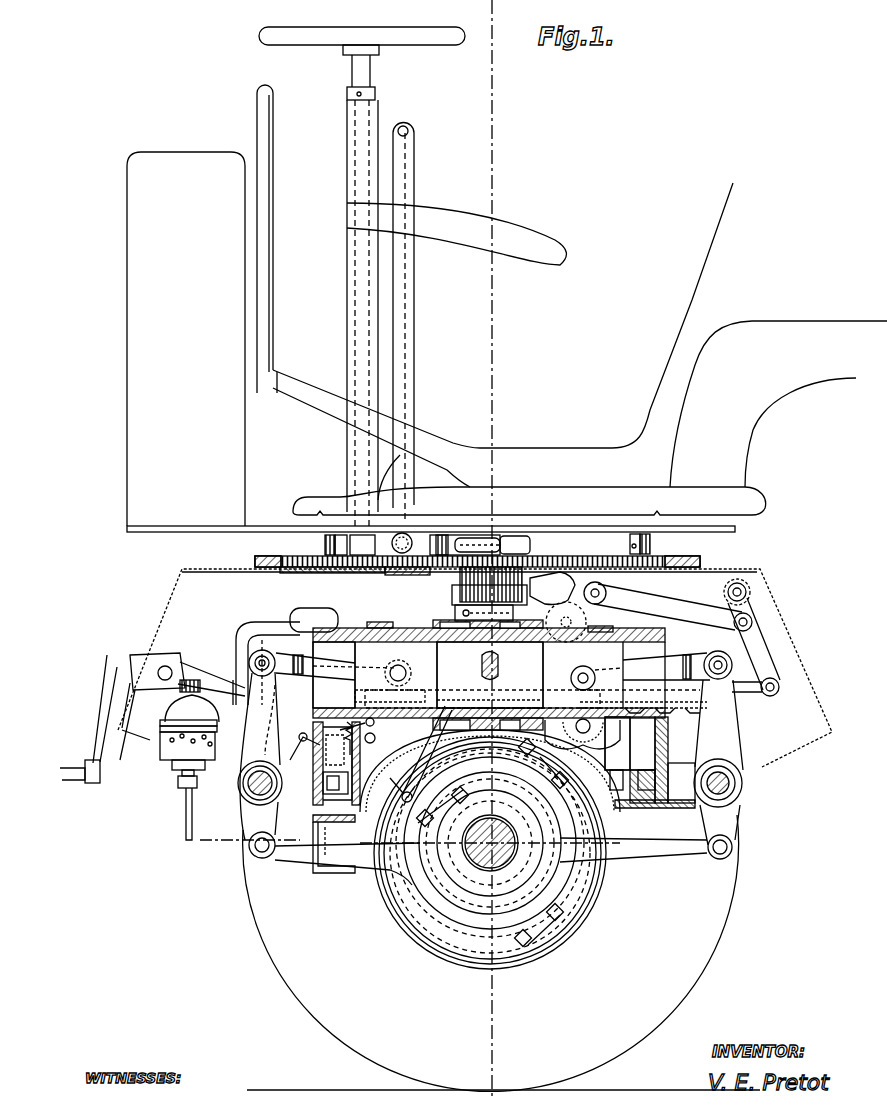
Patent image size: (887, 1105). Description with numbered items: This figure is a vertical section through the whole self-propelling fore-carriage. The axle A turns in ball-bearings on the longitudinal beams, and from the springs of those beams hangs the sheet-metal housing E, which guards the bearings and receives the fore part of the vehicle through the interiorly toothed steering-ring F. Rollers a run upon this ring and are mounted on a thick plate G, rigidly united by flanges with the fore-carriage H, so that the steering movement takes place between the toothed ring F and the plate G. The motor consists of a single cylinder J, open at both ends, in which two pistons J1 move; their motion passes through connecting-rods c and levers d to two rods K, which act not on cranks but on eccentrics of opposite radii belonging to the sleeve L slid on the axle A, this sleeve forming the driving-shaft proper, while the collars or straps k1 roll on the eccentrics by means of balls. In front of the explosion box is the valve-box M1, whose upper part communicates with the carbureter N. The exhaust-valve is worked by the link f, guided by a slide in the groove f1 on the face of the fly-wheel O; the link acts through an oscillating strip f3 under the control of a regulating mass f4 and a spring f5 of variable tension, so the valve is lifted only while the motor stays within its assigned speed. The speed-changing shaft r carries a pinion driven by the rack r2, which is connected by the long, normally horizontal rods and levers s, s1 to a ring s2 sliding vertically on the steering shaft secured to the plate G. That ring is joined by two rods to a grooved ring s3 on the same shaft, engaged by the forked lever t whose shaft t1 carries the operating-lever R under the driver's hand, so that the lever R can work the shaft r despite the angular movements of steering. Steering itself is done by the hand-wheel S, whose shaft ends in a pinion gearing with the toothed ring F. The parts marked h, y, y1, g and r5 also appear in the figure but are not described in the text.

The hand-wheel S is at (362, 46).
The operating-lever R is at (389, 308).
The fore-carriage H is at (529, 501).
The thick plate G is at (431, 541).
The rollers a is at (325, 545).
The forked lever t is at (440, 533).
The shaft of forked lever t1 is at (390, 575).
The steering-ring F is at (468, 560).
The sheet-metal housing E is at (475, 668).
The splined shaft h is at (489, 587).
The rods s is at (640, 612).
The levers s1 is at (778, 640).
The ring s2 is at (455, 612).
The grooved ring s3 is at (525, 548).
The cylinder J is at (490, 675).
The pistons J1 is at (482, 680).
The shaft y is at (390, 700).
The shaft y1 is at (488, 697).
The connecting-rods c is at (490, 761).
The valve-box M1 is at (325, 675).
The pipe g is at (242, 648).
The carbureter N is at (168, 745).
The levers d is at (490, 765).
The rods K is at (300, 852).
The sleeve L is at (501, 910).
The fly-wheel O is at (493, 843).
The axle A is at (490, 843).
The collars or straps k1 is at (547, 900).
The link f is at (421, 754).
The groove f1 is at (405, 880).
The oscillating strip f3 is at (335, 747).
The regulating mass f4 is at (358, 736).
The spring f5 is at (319, 780).
The shaft r is at (598, 740).
The rack r2 is at (688, 718).
The guide r5 is at (617, 743).